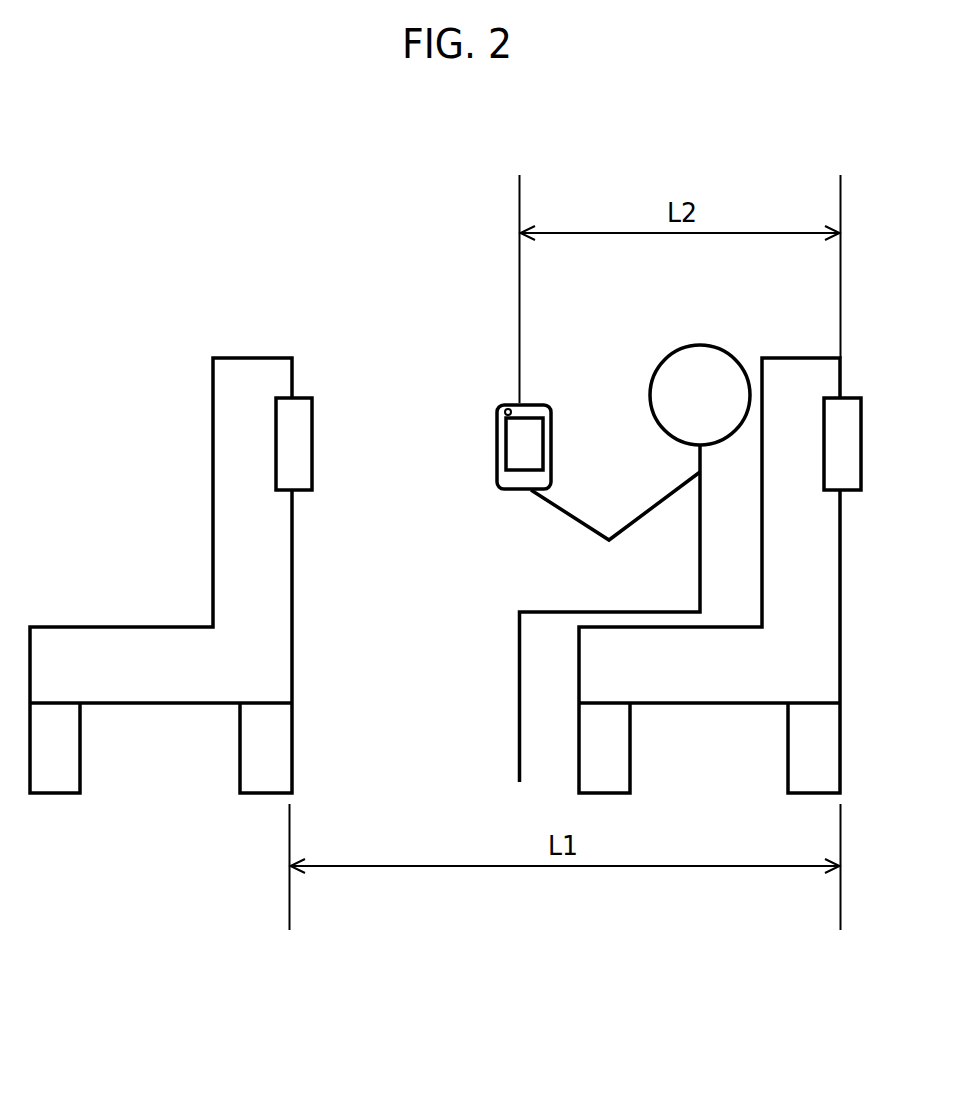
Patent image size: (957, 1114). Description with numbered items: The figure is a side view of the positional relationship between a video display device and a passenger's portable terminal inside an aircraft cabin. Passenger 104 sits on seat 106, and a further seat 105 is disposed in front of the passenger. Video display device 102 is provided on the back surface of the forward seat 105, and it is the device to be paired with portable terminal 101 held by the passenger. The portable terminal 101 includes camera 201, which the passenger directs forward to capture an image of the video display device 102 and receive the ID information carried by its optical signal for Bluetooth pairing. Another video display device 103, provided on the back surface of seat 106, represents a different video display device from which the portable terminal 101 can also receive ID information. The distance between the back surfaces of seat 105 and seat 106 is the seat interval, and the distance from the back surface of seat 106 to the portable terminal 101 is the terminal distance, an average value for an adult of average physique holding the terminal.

The portable terminal 101 is at (533, 405).
The video display device 102 is at (302, 398).
The other video display device 103 is at (848, 398).
The passenger 104 is at (708, 345).
The seat 105 is at (230, 358).
The seat 106 is at (778, 358).
The camera 201 is at (505, 405).